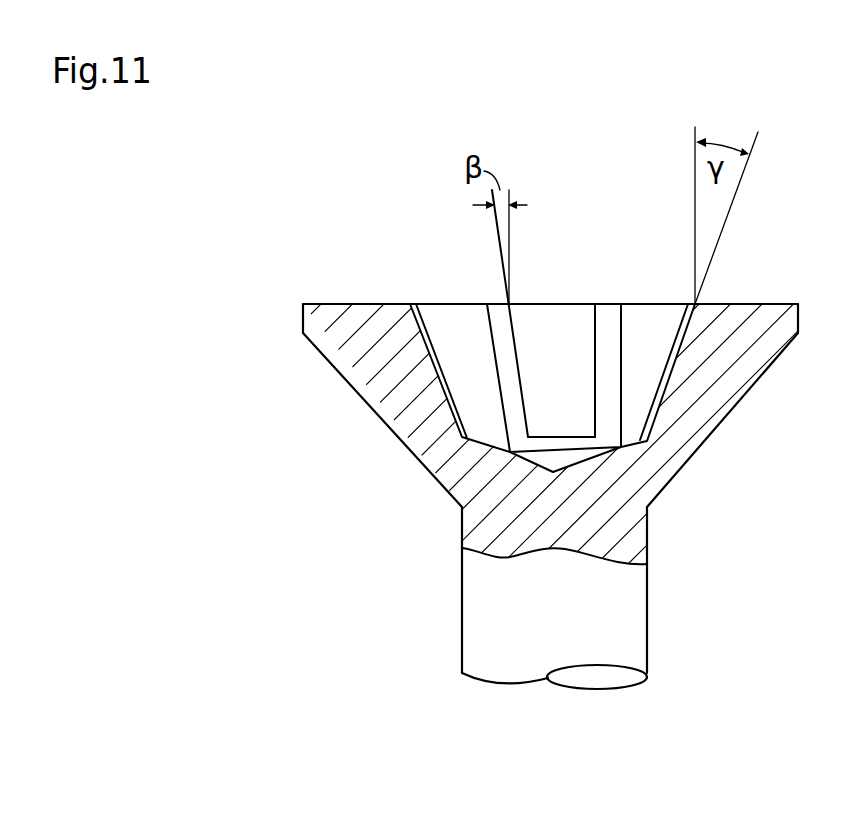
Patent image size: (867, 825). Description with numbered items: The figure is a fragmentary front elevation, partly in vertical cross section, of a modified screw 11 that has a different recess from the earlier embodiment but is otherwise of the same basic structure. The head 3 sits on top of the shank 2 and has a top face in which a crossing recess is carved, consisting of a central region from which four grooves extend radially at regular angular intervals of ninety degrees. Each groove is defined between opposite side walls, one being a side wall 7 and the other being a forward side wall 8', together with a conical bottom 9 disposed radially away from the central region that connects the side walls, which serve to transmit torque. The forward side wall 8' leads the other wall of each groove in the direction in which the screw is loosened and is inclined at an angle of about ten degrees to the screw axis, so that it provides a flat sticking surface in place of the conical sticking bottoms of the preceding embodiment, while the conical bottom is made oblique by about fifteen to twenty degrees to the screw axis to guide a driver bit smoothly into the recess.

The modified screw 11 is at (299, 302).
The head 3 is at (736, 375).
The shank 2 is at (620, 612).
The conical bottom 9 is at (427, 333).
The side wall 7 is at (450, 333).
The forward side wall 8' is at (561, 313).